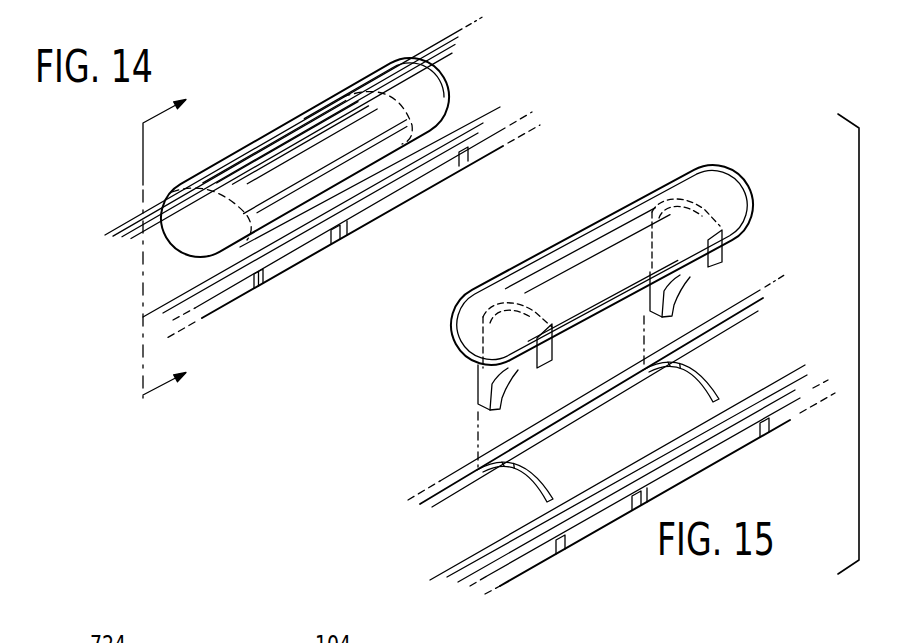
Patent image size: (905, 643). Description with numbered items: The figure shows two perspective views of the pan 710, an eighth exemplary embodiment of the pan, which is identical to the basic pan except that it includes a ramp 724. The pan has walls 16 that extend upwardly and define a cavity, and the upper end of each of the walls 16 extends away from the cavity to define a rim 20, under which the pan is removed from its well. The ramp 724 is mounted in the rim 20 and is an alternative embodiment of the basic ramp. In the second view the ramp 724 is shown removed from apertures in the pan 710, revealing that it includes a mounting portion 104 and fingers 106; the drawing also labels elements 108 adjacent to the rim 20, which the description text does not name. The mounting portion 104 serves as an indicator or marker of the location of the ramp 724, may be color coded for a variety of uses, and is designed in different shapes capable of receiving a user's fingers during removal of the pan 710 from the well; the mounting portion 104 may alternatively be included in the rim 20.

In FIG. 14, the rim 20 is at (474, 87).
In FIG. 15, the rim 20 is at (621, 434).
In FIG. 14, the ramp 724 is at (339, 91).
In FIG. 15, the ramp 724 is at (705, 170).
In FIG. 14, the walls 16 is at (176, 241).
In FIG. 14, the pan 710 is at (316, 207).
In FIG. 15, the pan 710 is at (576, 370).
In FIG. 15, the mounting portion 104 is at (752, 208).
In FIG. 15, the fingers 106 is at (486, 387).
In FIG. 15, the clips 108 is at (531, 492).